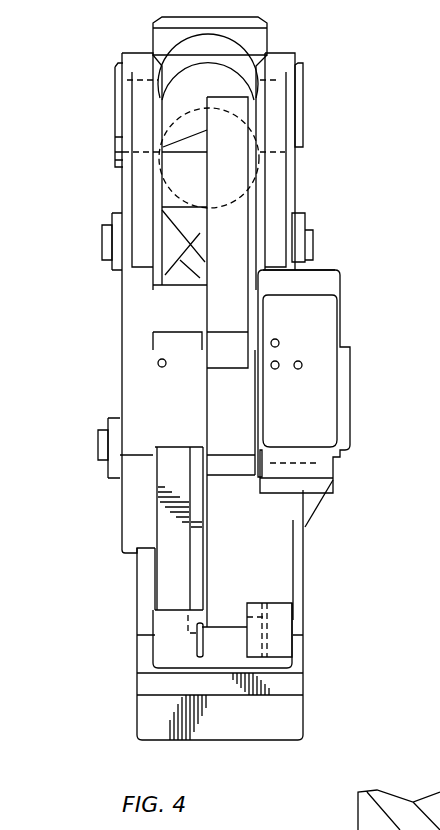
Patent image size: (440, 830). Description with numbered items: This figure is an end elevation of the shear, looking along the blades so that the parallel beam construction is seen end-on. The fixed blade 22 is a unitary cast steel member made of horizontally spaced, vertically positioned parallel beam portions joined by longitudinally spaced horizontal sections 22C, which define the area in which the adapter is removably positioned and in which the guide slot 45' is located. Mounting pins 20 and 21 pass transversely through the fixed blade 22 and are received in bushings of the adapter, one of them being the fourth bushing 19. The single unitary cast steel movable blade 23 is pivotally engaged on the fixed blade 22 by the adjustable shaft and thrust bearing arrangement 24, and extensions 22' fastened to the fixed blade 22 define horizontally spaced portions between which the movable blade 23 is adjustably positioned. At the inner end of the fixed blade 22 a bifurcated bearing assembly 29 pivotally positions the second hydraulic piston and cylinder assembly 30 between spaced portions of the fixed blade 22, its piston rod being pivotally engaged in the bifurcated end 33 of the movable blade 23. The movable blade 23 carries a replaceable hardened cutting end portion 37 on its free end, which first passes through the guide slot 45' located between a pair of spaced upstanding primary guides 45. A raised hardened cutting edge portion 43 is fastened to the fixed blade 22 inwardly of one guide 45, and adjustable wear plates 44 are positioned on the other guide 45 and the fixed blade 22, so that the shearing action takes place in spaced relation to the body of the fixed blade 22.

The fourth bushing 19 is at (297, 267).
The mounting pin 20 is at (100, 437).
The mounting pin 21 is at (106, 250).
The fixed blade 22 is at (206, 326).
The extensions 22' is at (235, 366).
The horizontally positioned sections 22C is at (147, 625).
The movable blade 23 is at (242, 212).
The adjustable shaft and thrust bearing arrangement 24 is at (356, 424).
The bifurcated bearing assembly 29 is at (305, 87).
The second hydraulic piston and cylinder assembly 30 is at (217, 58).
The bifurcated end 33 is at (177, 262).
The replaceable hardened cutting end portion 37 is at (220, 360).
The raised hardened cutting edge portion 43 is at (200, 567).
The adjustable wear plates 44 is at (270, 633).
The primary guides 45 is at (207, 646).
The guide slot 45' is at (240, 617).